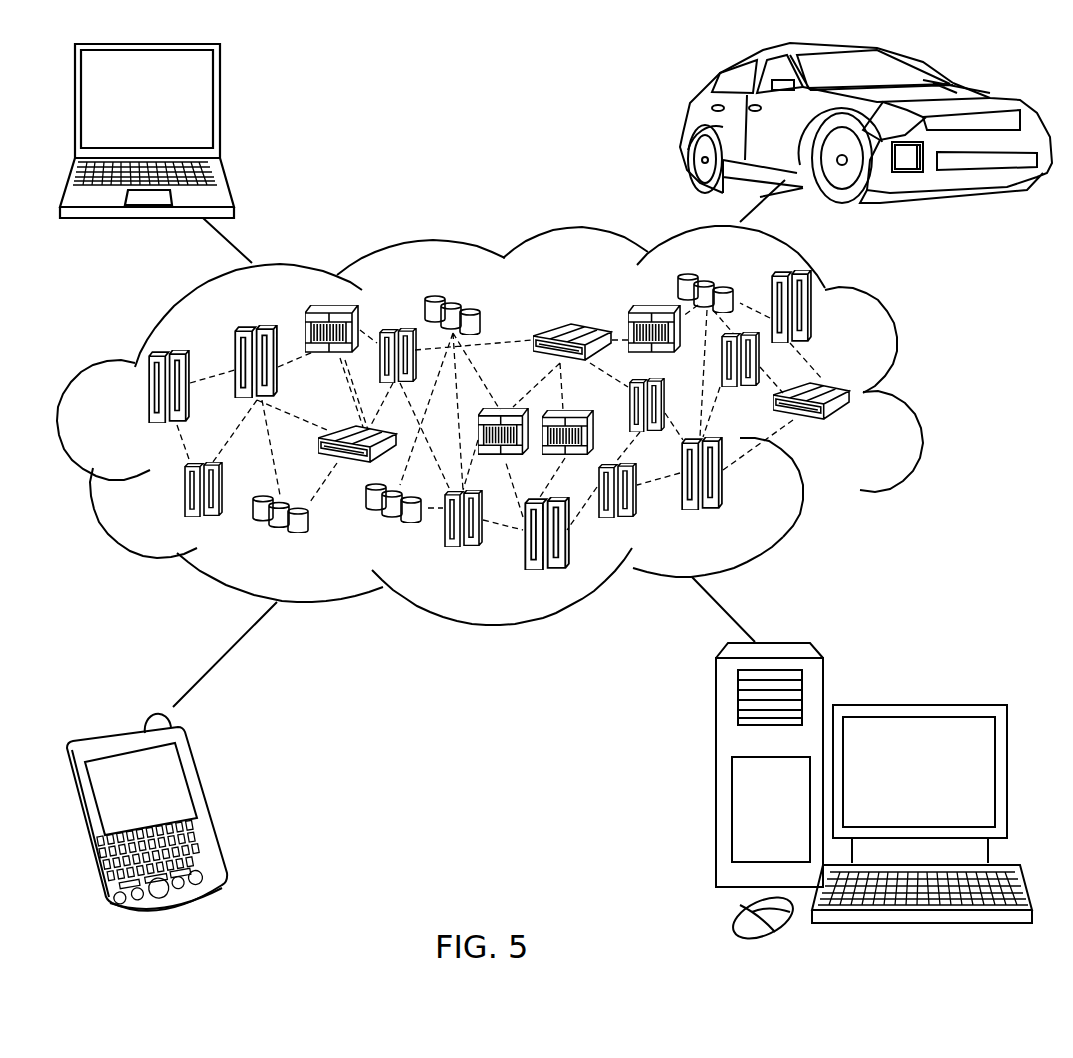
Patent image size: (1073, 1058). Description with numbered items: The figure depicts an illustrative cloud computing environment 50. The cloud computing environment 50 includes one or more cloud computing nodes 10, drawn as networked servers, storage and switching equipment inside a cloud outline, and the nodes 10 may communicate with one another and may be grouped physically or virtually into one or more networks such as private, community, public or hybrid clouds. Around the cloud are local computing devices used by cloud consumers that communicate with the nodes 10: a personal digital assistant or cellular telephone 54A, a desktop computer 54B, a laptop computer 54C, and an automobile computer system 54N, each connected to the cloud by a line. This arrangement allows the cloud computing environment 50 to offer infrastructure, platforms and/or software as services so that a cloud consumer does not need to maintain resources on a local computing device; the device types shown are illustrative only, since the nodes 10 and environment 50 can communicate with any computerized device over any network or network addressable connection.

The cloud computing node 10 is at (857, 430).
The cloud computing environment 50 is at (917, 397).
The personal digital assistant or cellular telephone 54A is at (210, 805).
The desktop computer 54B is at (918, 705).
The laptop computer 54C is at (220, 110).
The automobile computer system 54N is at (683, 125).